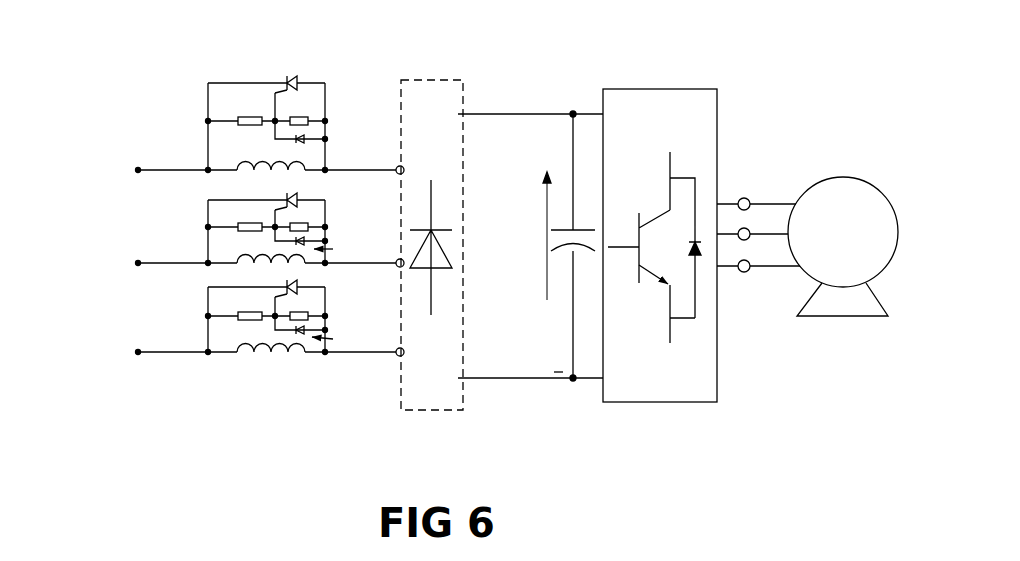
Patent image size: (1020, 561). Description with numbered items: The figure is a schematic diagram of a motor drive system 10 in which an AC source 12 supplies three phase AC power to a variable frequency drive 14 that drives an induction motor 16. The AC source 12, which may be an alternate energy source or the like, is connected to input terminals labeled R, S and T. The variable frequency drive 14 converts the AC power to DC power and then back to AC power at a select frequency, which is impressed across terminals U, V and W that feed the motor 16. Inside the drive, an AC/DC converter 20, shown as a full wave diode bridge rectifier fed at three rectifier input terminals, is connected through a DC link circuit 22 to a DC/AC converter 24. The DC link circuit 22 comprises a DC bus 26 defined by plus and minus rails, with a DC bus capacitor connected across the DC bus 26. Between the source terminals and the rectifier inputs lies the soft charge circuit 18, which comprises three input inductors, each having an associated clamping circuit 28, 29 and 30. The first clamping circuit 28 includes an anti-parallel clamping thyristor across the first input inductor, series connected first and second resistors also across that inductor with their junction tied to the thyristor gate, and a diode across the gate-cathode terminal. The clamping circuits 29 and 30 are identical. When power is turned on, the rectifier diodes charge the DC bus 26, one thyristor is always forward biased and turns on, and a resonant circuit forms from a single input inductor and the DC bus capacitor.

The motor drive system 10 is at (507, 63).
The AC source 12 is at (81, 273).
The variable frequency drive 14 is at (578, 419).
The induction motor 16 is at (861, 173).
The soft charge circuit 18 is at (245, 72).
The AC/DC converter 20 is at (436, 66).
The DC link circuit 22 is at (534, 105).
The DC/AC converter 24 is at (673, 85).
The DC bus 26 is at (528, 389).
The first clamping circuit 28 is at (282, 105).
The second clamping circuit 29 is at (200, 228).
The third clamping circuit 30 is at (196, 318).